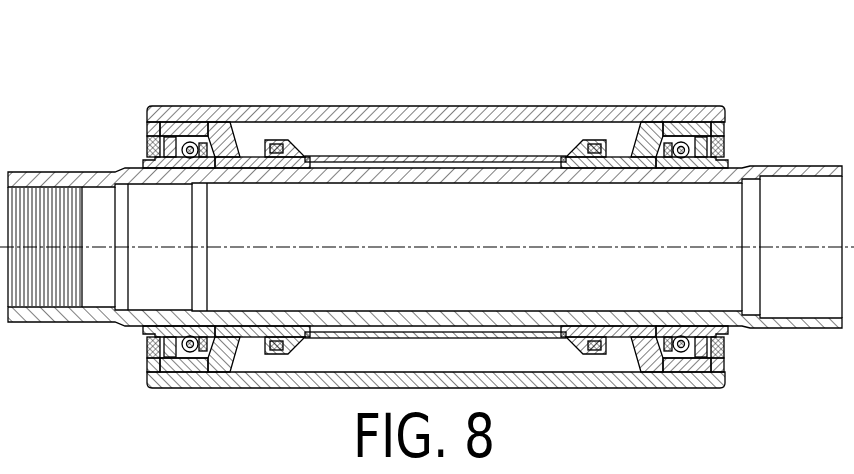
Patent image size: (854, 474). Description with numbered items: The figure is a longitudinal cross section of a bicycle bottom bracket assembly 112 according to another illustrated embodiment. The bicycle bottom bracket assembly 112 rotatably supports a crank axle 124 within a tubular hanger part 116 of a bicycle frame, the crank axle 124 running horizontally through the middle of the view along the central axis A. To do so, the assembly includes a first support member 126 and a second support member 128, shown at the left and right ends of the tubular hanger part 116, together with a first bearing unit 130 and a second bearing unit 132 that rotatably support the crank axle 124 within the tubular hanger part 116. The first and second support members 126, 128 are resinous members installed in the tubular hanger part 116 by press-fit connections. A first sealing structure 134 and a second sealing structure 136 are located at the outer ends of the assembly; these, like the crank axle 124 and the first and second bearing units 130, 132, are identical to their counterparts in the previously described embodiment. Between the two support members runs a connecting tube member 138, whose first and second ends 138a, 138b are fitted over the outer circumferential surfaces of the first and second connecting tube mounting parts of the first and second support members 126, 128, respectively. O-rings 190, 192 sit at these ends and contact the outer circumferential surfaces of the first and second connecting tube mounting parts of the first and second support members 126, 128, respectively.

The bicycle bottom bracket assembly 112 is at (430, 241).
The tubular hanger part 116 is at (457, 106).
The crank axle 124 is at (753, 162).
The first support member 126 is at (185, 105).
The second support member 128 is at (684, 105).
The first bearing unit 130 is at (188, 360).
The second bearing unit 132 is at (681, 360).
The first sealing structure 134 is at (128, 346).
The second sealing structure 136 is at (737, 352).
The connecting tube member 138 is at (389, 152).
The first end 138a is at (311, 210).
The second end 138b is at (570, 210).
The O-ring 190 is at (284, 170).
The O-ring 192 is at (590, 170).
The spindle axis A is at (400, 247).